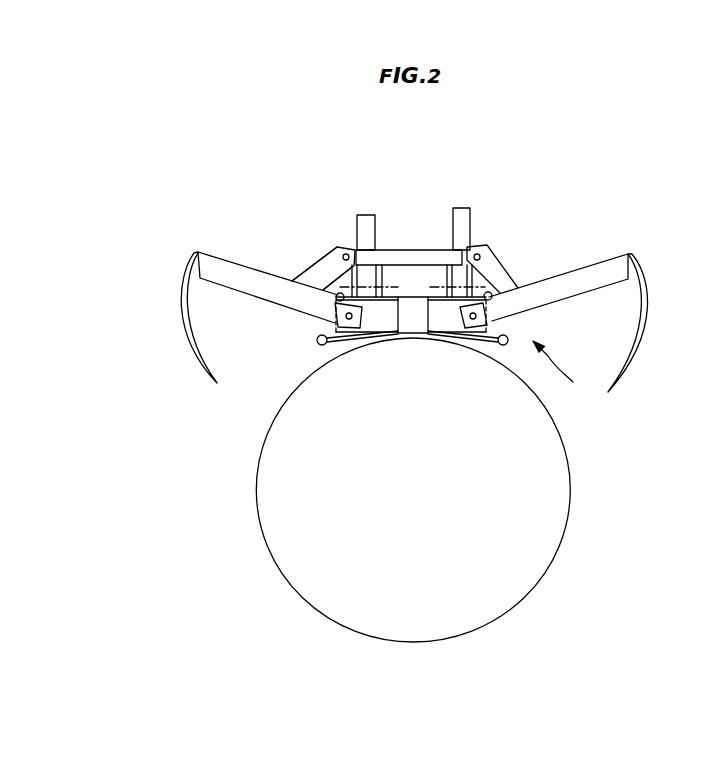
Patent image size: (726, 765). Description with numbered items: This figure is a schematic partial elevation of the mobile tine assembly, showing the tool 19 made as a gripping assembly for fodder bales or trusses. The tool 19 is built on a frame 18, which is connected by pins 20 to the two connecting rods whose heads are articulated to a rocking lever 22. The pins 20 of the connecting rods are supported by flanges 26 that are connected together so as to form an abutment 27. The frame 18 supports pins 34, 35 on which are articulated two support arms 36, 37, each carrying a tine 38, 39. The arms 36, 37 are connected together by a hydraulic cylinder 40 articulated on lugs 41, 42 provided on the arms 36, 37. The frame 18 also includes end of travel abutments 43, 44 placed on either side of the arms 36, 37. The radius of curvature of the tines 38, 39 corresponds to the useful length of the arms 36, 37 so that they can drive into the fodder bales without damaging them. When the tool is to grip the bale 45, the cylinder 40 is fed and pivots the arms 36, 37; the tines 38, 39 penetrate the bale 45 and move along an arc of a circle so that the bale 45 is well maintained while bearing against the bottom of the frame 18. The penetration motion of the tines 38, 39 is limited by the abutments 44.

The frame 18 is at (409, 322).
The tool 19 is at (565, 374).
The pins 20 is at (381, 290).
The rocking lever 22 is at (449, 213).
The flanges 26 is at (388, 292).
The abutment 27 is at (418, 273).
The pin 34 is at (356, 333).
The pin 35 is at (475, 328).
The support arm 36 is at (246, 268).
The support arm 37 is at (593, 268).
The tine 38 is at (190, 350).
The tine 39 is at (641, 351).
The hydraulic cylinder 40 is at (364, 258).
The lug 41 is at (313, 270).
The lug 42 is at (502, 263).
The end of travel abutment 43 is at (492, 294).
The end of travel abutment 44 is at (317, 342).
The bale 45 is at (543, 517).